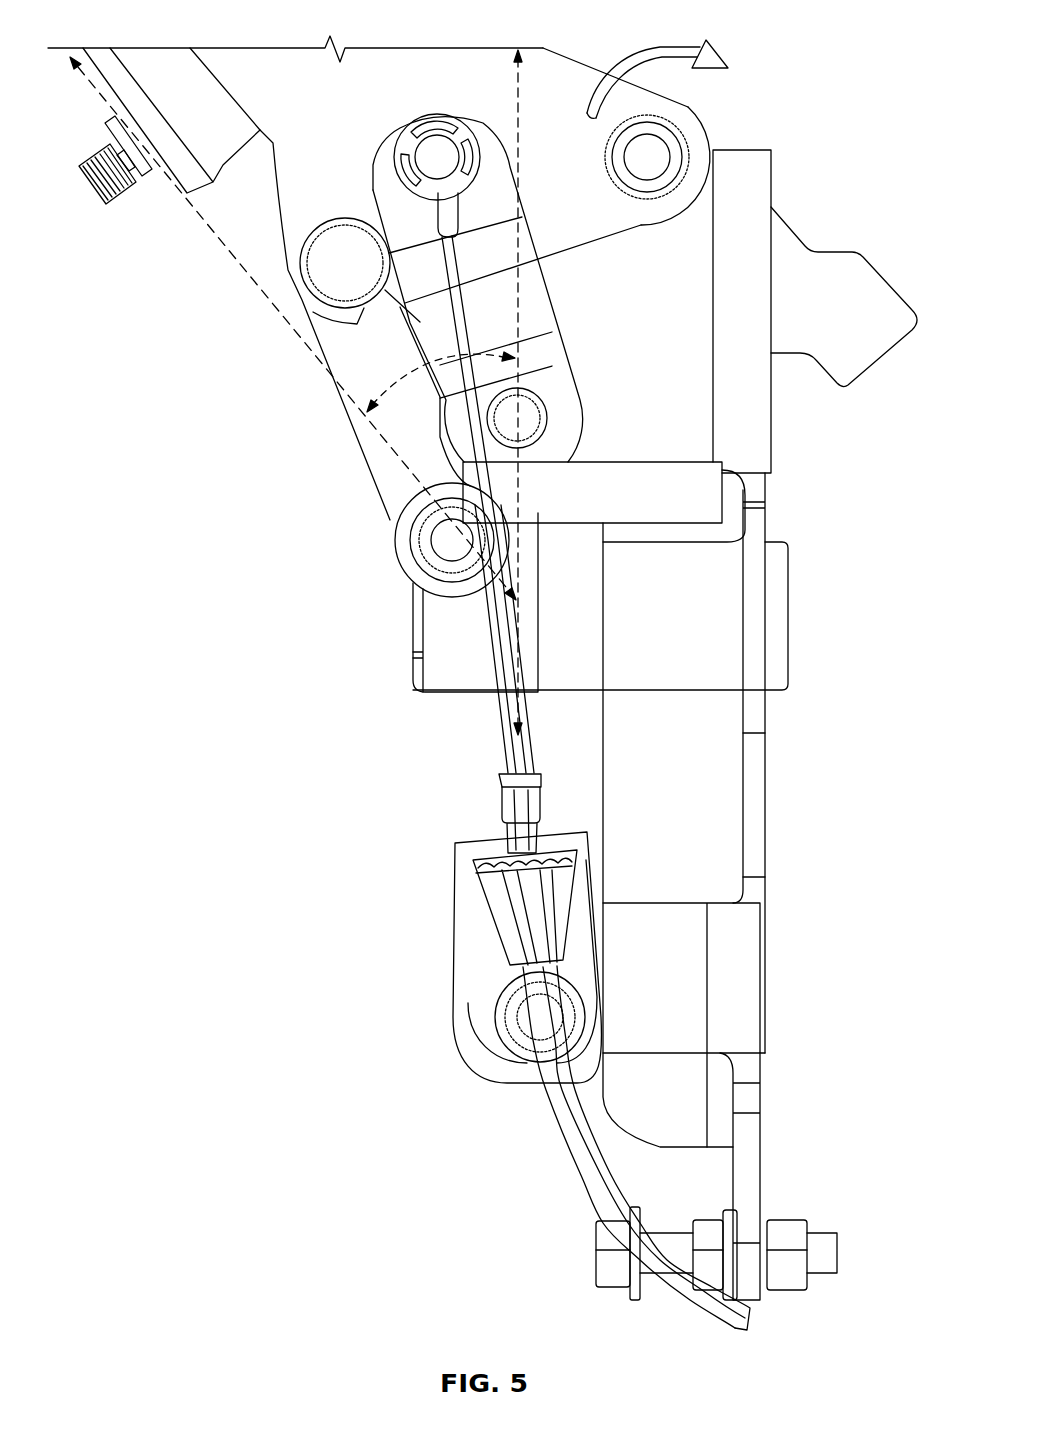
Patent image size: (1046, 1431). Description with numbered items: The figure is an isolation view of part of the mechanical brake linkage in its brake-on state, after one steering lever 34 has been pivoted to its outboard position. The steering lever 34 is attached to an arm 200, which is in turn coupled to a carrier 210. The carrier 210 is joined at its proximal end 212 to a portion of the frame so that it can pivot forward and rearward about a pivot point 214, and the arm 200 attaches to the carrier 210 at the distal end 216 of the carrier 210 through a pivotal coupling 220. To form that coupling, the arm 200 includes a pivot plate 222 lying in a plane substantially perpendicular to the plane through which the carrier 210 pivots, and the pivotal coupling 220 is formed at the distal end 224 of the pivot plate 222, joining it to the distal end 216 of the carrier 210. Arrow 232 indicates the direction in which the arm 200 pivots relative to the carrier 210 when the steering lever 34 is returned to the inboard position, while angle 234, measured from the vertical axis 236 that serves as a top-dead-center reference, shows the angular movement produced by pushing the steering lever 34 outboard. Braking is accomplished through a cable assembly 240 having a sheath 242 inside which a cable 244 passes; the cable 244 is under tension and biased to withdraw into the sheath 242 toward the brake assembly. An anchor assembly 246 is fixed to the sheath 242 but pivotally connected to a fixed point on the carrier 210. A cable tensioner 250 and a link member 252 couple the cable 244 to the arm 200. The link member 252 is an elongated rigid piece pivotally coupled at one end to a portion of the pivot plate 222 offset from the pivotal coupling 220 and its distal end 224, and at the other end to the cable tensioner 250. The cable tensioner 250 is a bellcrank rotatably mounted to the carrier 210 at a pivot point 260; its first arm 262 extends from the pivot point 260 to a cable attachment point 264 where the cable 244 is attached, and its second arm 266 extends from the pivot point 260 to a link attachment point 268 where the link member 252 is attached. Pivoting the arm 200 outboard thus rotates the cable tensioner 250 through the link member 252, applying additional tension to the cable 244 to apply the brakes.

The steering lever 34 is at (110, 93).
The arm 200 is at (253, 120).
The carrier 210 is at (745, 970).
The proximal end 212 is at (753, 1323).
The pivot point 214 is at (795, 1245).
The distal end 216 is at (773, 151).
The pivotal coupling 220 is at (663, 148).
The pivot plate 222 is at (547, 77).
The distal end 224 is at (714, 177).
The arrow 232 is at (728, 60).
The angle 234 is at (367, 413).
The vertical axis 236 is at (517, 98).
The cable assembly 240 is at (390, 868).
The sheath 242 is at (560, 1125).
The cable 244 is at (494, 633).
The anchor assembly 246 is at (482, 960).
The cable tensioner 250 is at (570, 374).
The link member 252 is at (348, 355).
The pivot point 260 is at (527, 427).
The first arm 262 is at (477, 230).
The cable attachment point 264 is at (428, 147).
The second arm 266 is at (533, 533).
The link attachment point 268 is at (450, 538).